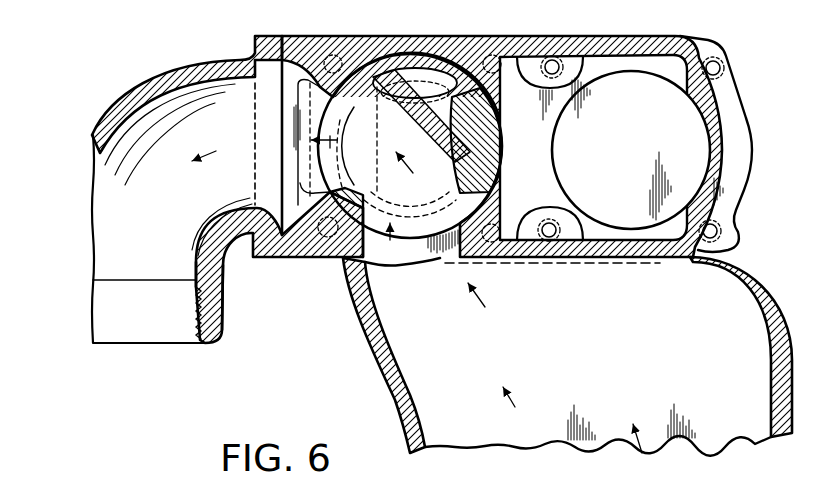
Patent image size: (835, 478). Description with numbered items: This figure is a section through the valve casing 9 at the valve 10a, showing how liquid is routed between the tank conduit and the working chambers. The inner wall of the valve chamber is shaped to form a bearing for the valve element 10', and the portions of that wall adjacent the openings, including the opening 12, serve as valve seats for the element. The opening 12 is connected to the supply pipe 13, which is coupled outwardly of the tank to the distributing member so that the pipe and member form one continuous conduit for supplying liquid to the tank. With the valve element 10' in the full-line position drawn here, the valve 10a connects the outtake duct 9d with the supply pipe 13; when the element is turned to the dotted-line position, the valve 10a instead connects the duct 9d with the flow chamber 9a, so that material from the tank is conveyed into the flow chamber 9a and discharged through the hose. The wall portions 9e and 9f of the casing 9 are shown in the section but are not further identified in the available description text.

The valve housing 9 is at (816, 341).
The flow chamber 9a is at (690, 152).
The outtake duct 9d is at (753, 403).
The housing wall 9e is at (289, 258).
The partition wall 9f is at (520, 258).
The valve element 10' is at (593, 148).
The valve 10a is at (397, 229).
The opening 12 is at (320, 258).
The supply pipe 13 is at (210, 345).